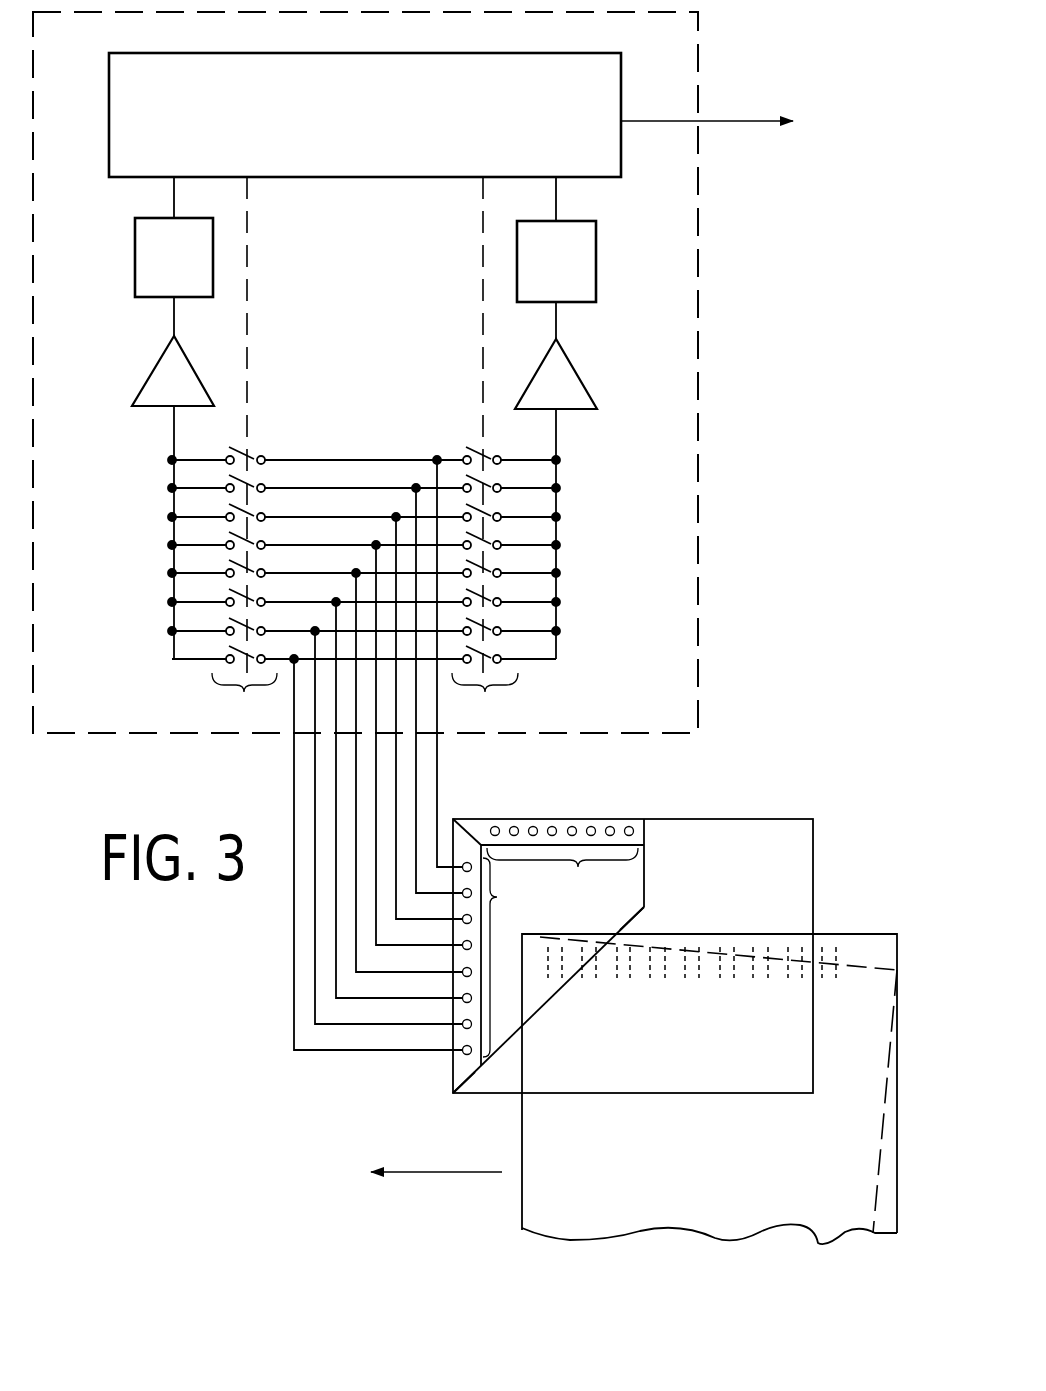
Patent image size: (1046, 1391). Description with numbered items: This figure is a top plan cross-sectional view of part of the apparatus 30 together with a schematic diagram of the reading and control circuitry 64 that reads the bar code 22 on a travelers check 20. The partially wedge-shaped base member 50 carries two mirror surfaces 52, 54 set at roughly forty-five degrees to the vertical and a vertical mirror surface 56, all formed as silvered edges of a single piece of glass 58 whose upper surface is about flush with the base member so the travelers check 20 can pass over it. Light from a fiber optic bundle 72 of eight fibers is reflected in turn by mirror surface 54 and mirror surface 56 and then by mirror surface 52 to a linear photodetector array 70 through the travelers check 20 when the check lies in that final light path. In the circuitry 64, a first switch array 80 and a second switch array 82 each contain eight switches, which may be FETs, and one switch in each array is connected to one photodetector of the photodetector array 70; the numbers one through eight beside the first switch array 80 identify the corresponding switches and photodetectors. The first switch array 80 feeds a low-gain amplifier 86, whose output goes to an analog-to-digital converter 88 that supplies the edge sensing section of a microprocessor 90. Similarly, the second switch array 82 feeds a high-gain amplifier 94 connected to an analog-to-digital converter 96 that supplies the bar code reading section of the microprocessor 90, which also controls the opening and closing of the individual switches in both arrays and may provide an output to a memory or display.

The travelers check 20 is at (545, 1190).
The bar code 22 is at (690, 960).
The apparatus 30 is at (220, 1068).
The base member 50 is at (742, 832).
The mirror surface 52 is at (458, 1065).
The mirror surface 54 is at (480, 825).
The vertical mirror surface 56 is at (636, 905).
The single piece of glass 58 is at (508, 990).
The control circuitry 64 is at (657, 478).
The linear photodetector array 70 is at (540, 922).
The fiber optic bundle 72 is at (597, 905).
The first switch array 80 is at (244, 692).
The second switch array 82 is at (485, 692).
The low-gain amplifier 86 is at (172, 362).
The analog-to-digital converter 88 is at (145, 241).
The microprocessor 90 is at (413, 155).
The high-gain amplifier 94 is at (558, 367).
The analog-to-digital converter 96 is at (596, 243).